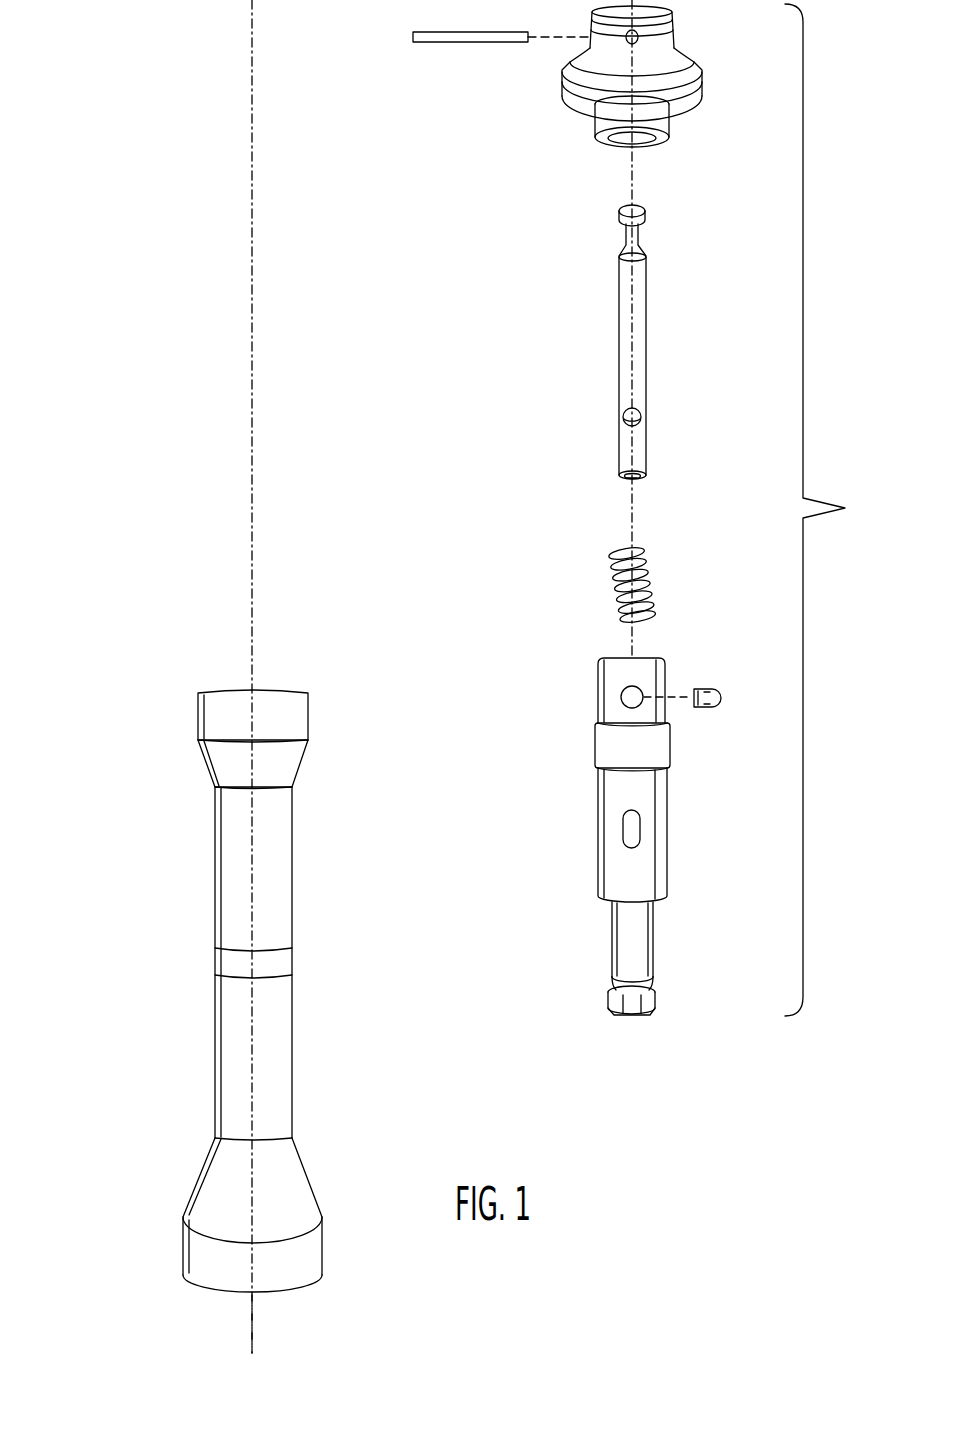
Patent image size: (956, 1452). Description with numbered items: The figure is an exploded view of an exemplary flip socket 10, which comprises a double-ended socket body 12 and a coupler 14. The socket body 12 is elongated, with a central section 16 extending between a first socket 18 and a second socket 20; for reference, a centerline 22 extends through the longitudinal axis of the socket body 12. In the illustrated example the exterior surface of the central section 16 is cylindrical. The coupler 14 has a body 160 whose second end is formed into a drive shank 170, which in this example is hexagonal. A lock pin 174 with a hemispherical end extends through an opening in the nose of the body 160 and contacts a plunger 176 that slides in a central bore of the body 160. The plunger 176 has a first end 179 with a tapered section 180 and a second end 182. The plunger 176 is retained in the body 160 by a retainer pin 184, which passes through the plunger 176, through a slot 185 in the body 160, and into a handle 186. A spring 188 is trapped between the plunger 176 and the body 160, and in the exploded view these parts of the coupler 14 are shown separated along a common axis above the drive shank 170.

The flip socket 10 is at (140, 158).
The double-ended socket body 12 is at (176, 919).
The coupler 14 is at (643, 508).
The central section 16 is at (280, 908).
The first socket 18 is at (290, 1176).
The second socket 20 is at (300, 723).
The centerline 22 is at (252, 1328).
The body 160 is at (648, 800).
The drive shank 170 is at (636, 945).
The lock pin 174 is at (705, 686).
The plunger 176 is at (641, 330).
The first end 179 is at (642, 210).
The tapered section 180 is at (641, 254).
The second end 182 is at (640, 479).
The retainer pin 184 is at (462, 42).
The slot 185 is at (636, 832).
The handle 186 is at (579, 117).
The spring 188 is at (650, 577).